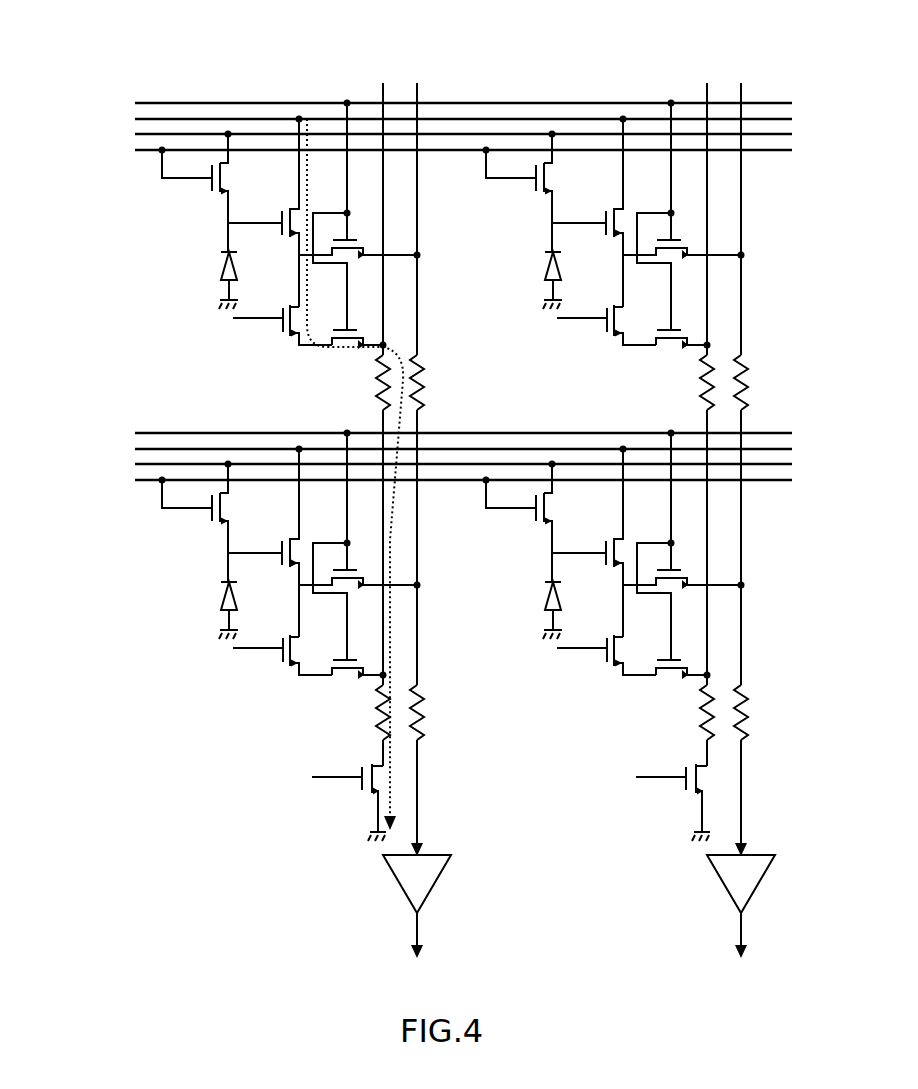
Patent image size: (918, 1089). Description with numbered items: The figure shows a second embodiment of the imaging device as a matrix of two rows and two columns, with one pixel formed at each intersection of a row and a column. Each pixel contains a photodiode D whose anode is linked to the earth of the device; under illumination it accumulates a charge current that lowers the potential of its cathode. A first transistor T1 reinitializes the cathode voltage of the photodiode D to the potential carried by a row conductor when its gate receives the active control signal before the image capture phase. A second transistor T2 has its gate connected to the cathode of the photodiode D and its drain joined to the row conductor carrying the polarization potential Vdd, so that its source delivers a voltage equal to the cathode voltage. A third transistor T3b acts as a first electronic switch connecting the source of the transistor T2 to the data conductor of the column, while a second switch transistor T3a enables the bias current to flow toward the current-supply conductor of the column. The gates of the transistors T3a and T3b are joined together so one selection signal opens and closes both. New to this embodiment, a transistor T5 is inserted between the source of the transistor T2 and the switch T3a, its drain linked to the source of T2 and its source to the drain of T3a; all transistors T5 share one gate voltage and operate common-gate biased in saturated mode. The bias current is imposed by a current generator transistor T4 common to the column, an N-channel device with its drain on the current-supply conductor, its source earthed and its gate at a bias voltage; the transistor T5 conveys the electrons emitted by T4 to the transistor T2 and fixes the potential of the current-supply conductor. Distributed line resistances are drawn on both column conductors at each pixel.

The polarization potential Vdd is at (443, 283).
The first transistor T1 is at (382, 357).
The second transistor T2 is at (427, 377).
The second electronic switch transistor T3a is at (509, 401).
The third transistor T3b is at (522, 401).
The new transistor T5 is at (442, 478).
The photodiode D is at (361, 445).
The current generator transistor T4 is at (511, 798).
The column output signal S(j) and amplifier S is at (579, 882).